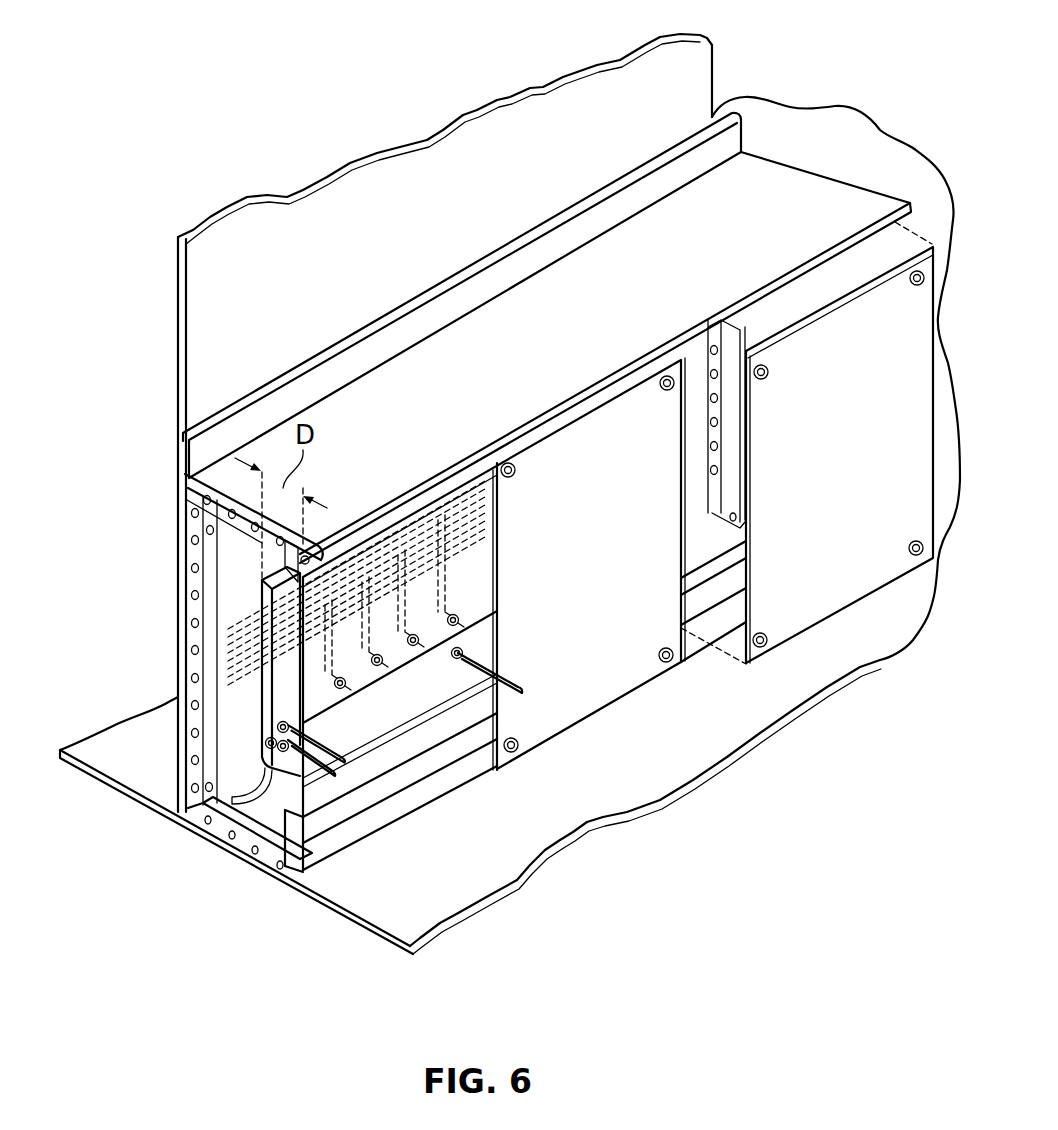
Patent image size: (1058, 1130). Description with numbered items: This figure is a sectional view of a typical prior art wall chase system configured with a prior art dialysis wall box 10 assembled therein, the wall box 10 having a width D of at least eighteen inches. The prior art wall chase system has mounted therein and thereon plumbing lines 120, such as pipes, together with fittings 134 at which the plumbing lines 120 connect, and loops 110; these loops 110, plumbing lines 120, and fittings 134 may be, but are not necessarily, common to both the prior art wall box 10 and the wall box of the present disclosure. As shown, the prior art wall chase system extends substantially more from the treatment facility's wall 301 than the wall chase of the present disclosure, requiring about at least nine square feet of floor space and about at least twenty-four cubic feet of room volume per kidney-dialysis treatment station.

The treatment facility's wall 301 is at (355, 192).
The prior art dialysis wall box 10 is at (483, 580).
The loops 110 is at (237, 673).
The fittings 134 is at (458, 622).
The plumbing lines 120 is at (520, 690).